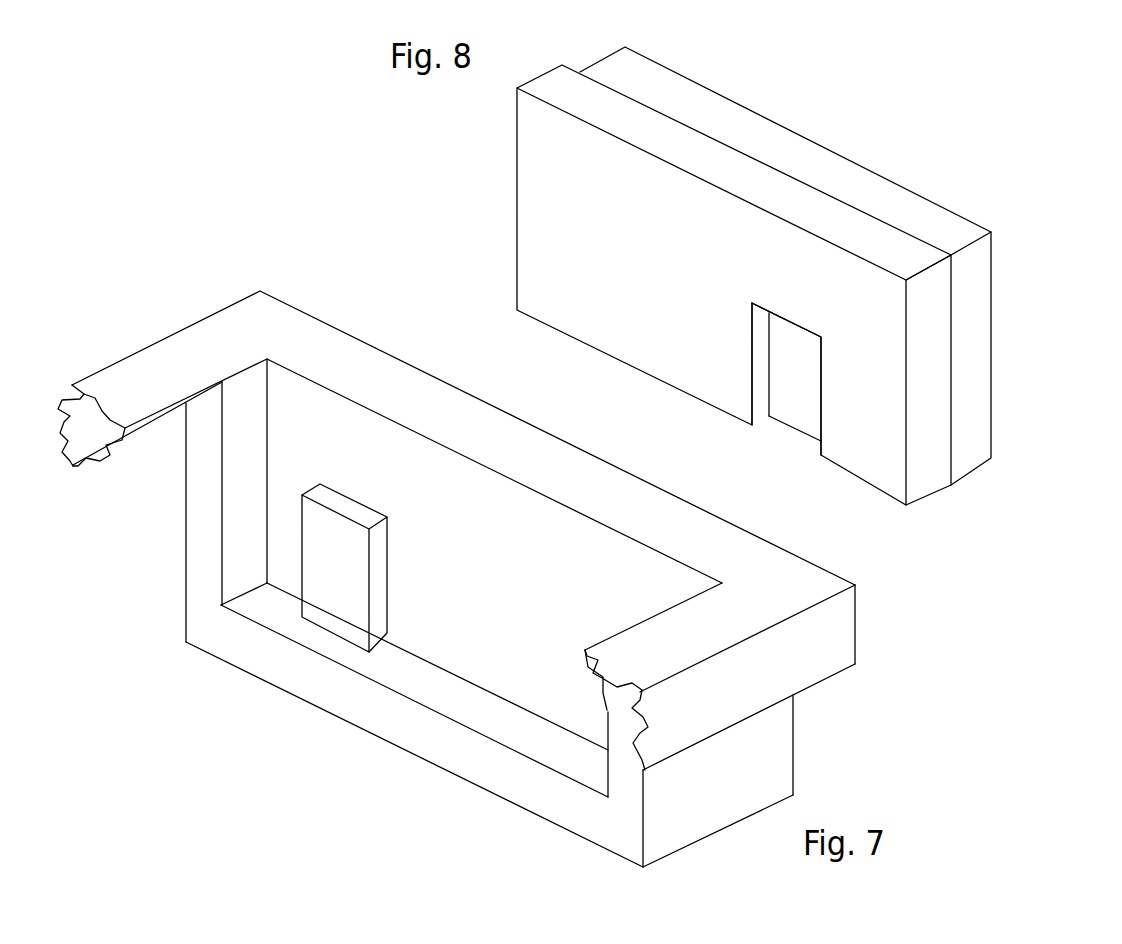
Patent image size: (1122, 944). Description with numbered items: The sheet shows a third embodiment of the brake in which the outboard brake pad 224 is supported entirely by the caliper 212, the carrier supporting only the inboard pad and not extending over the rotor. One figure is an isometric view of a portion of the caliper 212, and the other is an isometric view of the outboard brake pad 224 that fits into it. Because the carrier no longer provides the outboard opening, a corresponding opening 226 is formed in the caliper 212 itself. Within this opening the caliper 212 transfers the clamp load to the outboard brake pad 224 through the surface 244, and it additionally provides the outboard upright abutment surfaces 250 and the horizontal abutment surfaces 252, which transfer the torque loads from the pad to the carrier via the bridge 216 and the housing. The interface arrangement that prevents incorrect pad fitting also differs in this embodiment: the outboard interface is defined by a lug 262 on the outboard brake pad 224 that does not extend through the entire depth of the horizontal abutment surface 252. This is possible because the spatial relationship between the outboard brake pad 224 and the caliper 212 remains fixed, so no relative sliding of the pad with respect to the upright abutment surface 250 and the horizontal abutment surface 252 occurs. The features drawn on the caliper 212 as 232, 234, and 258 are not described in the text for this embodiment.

In FIG. 7, the caliper 212 is at (317, 301).
In FIG. 7, the bridge 216 is at (813, 652).
In FIG. 8, the outboard brake pad 224 is at (778, 85).
In FIG. 7, the opening 226 is at (505, 718).
In FIG. 8, the block body 232 is at (867, 230).
In FIG. 8, the back plate 234 is at (970, 290).
In FIG. 7, the surface 244 is at (460, 600).
In FIG. 7, the outboard upright abutment surface 250 is at (238, 500).
In FIG. 7, the horizontal abutment surface 252 is at (435, 685).
In FIG. 7, the key block 258 is at (333, 602).
In FIG. 8, the lug 262 is at (792, 397).